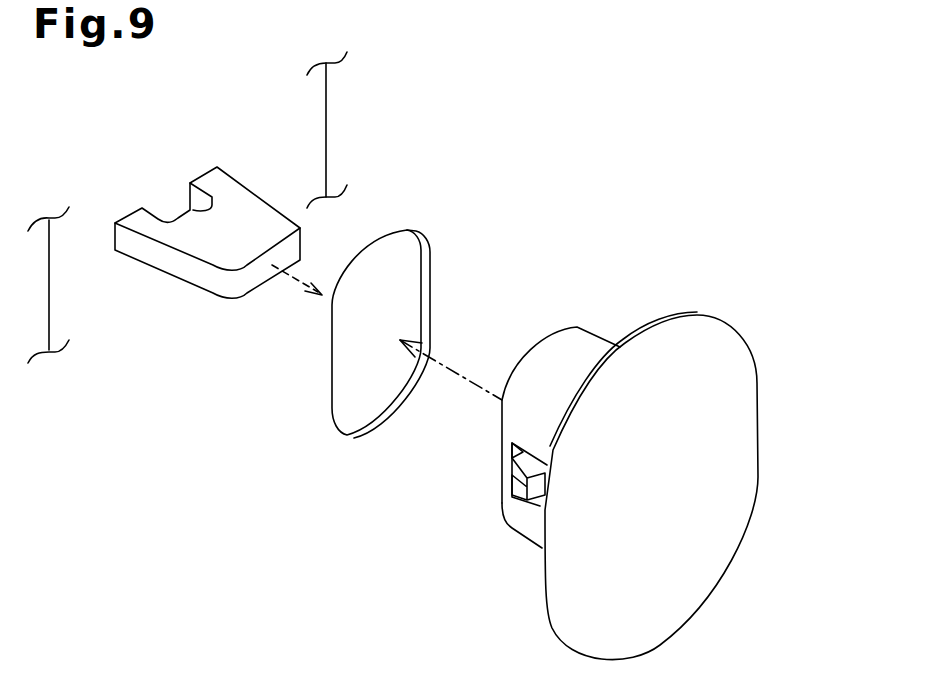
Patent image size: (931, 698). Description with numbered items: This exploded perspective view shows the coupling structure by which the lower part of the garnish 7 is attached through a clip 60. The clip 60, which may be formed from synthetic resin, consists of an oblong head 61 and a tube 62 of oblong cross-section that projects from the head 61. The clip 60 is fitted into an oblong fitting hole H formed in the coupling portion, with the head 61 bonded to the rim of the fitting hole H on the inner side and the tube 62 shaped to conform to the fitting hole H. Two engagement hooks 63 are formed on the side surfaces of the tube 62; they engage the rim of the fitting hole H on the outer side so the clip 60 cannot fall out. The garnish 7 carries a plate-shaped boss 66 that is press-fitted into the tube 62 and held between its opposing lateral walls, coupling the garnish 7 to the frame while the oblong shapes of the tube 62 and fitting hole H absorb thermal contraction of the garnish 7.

The garnish 7 is at (312, 125).
The clip 60 is at (730, 343).
The oblong head 61 is at (702, 315).
The tube 62 is at (520, 516).
The engagement hook 63 is at (527, 462).
The plate-shaped boss 66 is at (178, 268).
The fitting hole H is at (333, 360).